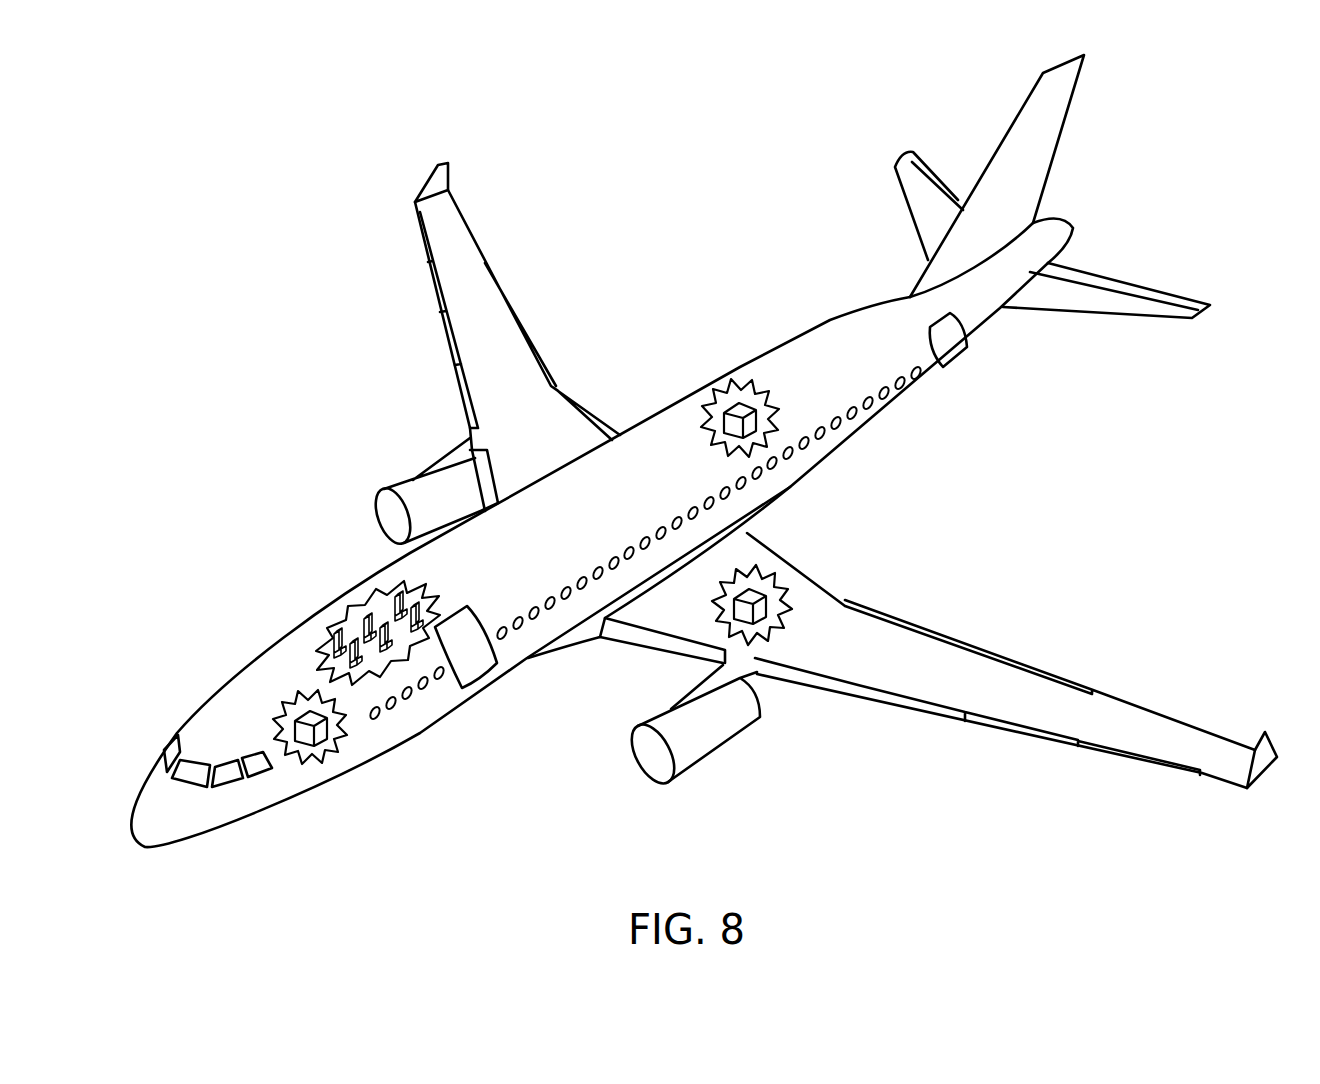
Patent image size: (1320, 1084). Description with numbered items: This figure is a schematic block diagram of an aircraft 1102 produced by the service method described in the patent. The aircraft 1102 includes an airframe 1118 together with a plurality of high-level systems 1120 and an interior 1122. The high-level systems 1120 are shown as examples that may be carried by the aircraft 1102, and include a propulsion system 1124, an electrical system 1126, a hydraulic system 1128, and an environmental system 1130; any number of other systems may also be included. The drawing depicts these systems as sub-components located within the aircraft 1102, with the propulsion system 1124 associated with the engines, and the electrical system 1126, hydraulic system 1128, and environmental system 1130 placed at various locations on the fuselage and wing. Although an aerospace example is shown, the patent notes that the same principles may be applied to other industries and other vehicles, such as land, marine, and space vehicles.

The aircraft 1102 is at (704, 451).
The airframe 1118 is at (362, 572).
The high-level systems 1120 is at (1024, 553).
The interior 1122 is at (334, 645).
The propulsion system 1124 is at (400, 478).
The electrical system 1126 is at (303, 715).
The hydraulic system 1128 is at (762, 609).
The environmental system 1130 is at (733, 407).